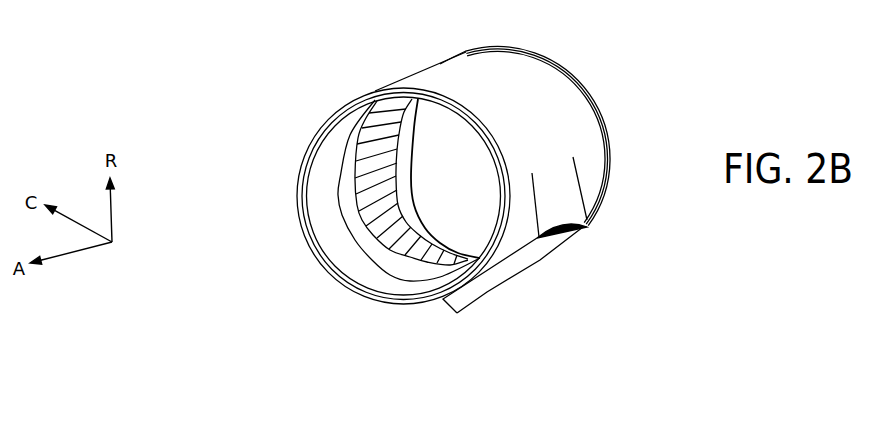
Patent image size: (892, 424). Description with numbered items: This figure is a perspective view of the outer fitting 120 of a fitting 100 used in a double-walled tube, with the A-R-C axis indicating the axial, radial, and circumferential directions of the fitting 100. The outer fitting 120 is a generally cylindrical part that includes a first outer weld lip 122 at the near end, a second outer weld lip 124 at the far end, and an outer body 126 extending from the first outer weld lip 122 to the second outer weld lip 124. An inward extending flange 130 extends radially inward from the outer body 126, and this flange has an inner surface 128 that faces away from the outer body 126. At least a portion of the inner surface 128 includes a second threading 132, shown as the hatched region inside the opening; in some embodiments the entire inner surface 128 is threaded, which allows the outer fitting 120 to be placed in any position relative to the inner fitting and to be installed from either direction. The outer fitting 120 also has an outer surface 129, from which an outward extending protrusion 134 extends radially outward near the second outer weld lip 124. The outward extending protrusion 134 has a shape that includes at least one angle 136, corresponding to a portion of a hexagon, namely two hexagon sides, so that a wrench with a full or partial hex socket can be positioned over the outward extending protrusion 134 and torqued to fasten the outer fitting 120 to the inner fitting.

The fitting 100 is at (202, 73).
The outer fitting 120 is at (212, 132).
The first outer weld lip 122 is at (322, 270).
The second outer weld lip 124 is at (582, 88).
The outer body 126 is at (427, 77).
The inner surface 128 is at (365, 175).
The outer surface 129 is at (467, 67).
The inward extending flange 130 is at (381, 240).
The second threading 132 is at (412, 255).
The outward extending protrusion 134 is at (560, 207).
The angle 136 is at (589, 227).